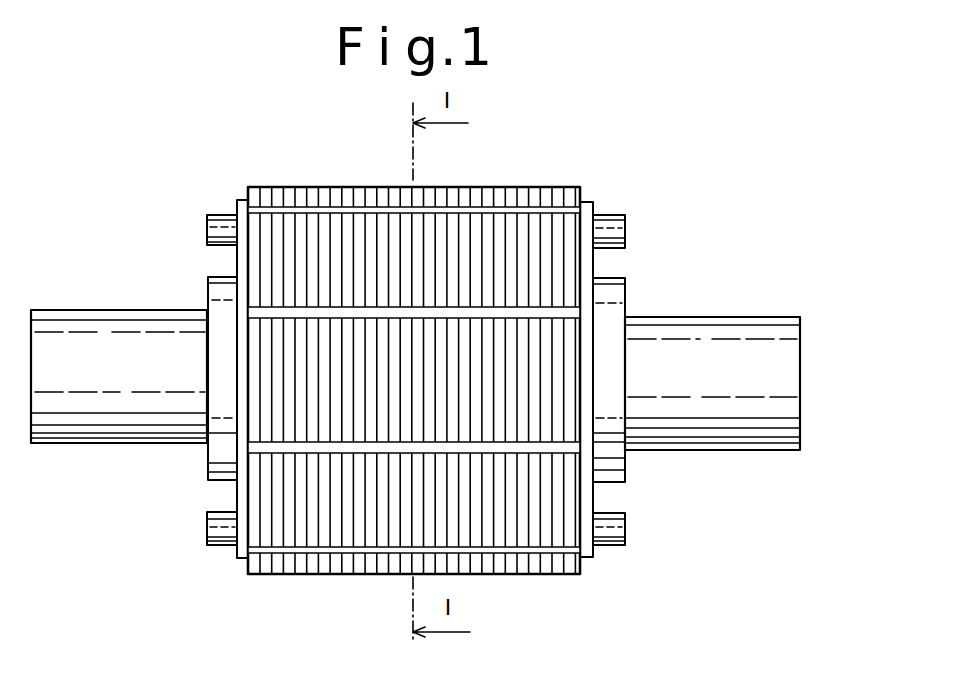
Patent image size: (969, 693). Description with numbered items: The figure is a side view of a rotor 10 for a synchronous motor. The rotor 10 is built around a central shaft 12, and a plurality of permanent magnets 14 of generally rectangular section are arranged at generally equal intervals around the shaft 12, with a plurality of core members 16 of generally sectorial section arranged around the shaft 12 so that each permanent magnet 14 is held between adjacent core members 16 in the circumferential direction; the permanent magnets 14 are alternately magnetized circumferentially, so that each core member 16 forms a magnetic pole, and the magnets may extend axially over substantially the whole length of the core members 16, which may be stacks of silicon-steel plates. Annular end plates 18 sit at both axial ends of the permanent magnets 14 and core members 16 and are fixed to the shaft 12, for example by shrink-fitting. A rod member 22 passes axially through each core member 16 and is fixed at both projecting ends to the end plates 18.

The rotor 10 is at (493, 156).
The shaft 12 is at (126, 421).
The permanent magnet 14 is at (360, 451).
The core member 16 is at (277, 262).
The end plate 18 is at (597, 207).
The rod member 22 is at (625, 223).